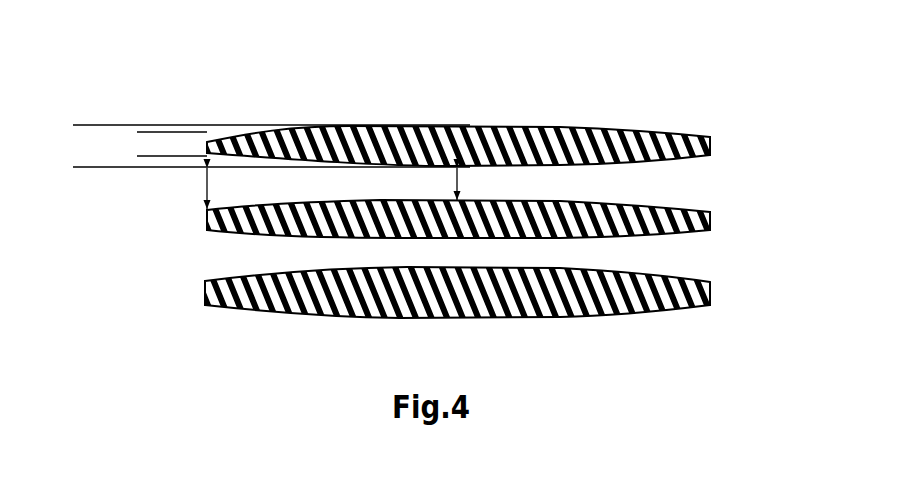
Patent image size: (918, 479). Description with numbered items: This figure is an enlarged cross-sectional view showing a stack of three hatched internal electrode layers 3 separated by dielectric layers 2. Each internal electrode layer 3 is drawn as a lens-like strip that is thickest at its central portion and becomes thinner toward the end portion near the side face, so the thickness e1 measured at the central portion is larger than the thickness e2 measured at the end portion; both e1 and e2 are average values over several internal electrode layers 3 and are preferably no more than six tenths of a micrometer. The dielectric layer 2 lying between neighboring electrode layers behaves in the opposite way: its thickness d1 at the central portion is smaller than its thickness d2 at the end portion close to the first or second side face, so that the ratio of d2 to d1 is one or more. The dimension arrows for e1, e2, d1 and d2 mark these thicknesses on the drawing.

The dielectric layer 2 is at (717, 208).
The internal electrode layer 3 is at (471, 127).
The thickness at the central portion of the internal electrode layer e1 is at (79, 126).
The thickness at the end portion of the internal electrode layer e2 is at (144, 133).
The thickness at the central portion of the dielectric layer d1 is at (478, 183).
The thickness at the end portion of the dielectric layer d2 is at (224, 188).